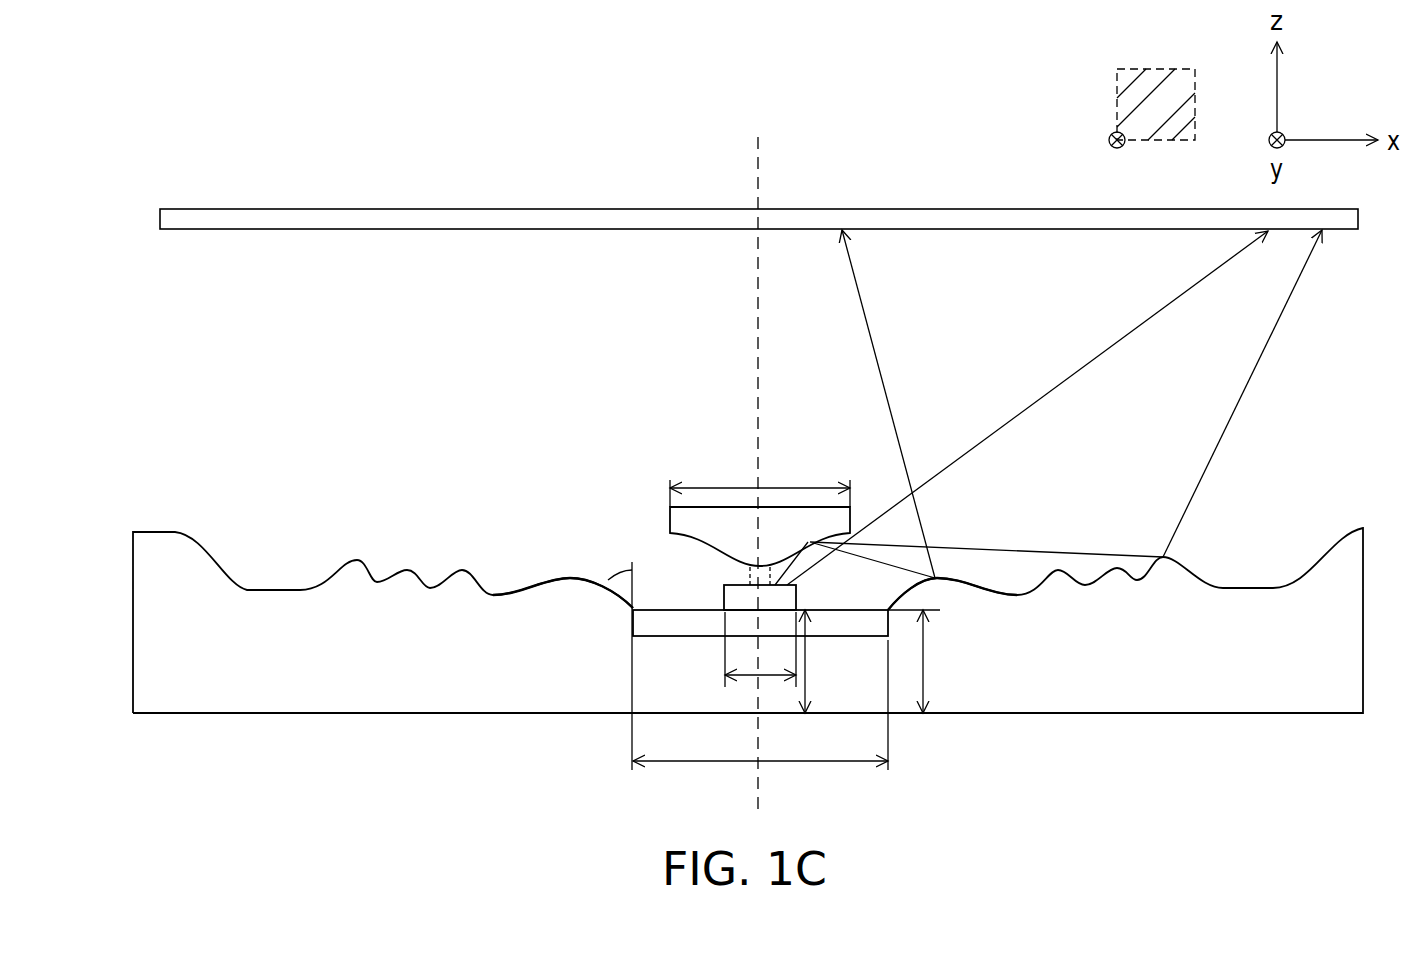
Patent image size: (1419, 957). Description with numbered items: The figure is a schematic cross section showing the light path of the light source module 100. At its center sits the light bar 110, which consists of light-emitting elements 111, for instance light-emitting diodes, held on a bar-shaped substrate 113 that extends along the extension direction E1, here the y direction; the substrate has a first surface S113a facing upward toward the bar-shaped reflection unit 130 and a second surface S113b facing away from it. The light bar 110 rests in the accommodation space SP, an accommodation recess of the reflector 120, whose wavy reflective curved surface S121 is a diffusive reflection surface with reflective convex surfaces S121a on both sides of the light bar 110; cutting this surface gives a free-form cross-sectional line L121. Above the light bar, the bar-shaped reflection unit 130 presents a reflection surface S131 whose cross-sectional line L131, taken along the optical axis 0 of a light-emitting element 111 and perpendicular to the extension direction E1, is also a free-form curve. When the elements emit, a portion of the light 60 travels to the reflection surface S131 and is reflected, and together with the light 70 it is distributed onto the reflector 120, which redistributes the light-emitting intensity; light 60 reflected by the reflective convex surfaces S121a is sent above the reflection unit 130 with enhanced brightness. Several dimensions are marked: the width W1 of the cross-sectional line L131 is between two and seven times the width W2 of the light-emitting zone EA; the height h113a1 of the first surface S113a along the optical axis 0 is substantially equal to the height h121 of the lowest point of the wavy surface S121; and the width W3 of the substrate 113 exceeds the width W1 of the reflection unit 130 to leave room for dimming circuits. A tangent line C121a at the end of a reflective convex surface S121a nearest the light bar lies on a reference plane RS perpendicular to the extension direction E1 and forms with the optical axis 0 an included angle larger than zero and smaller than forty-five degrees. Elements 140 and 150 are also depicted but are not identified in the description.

The light source module 100 is at (1362, 859).
The light bar 110 is at (684, 695).
The light-emitting element 111 is at (722, 605).
The bar-shaped substrate 113 is at (642, 623).
The first surface S113a is at (857, 607).
The second surface S113b is at (697, 640).
The reflector 120 is at (1283, 590).
The wavy reflective curved surface S121 is at (1227, 588).
The reflective convex surface S121a is at (565, 573).
The tangent line C121a is at (600, 575).
The cross-sectional line L121 is at (1345, 527).
The bar-shaped reflection unit 130 is at (835, 522).
The reflection surface S131 is at (708, 544).
The cross-sectional line L131 is at (670, 518).
The light emitting region 140 is at (748, 568).
The diffuser plate 150 is at (260, 222).
The light 60 is at (865, 318).
The light 70 is at (1142, 322).
The optical axis 0 is at (758, 157).
The reference plane RS is at (1162, 85).
The extension direction E1 is at (1121, 159).
The accommodation space SP is at (668, 570).
The light-emitting zone EA is at (742, 582).
The width W1 is at (760, 480).
The width W2 is at (760, 649).
The width W3 is at (760, 705).
The height h113a1 is at (844, 661).
The height h121 is at (954, 661).